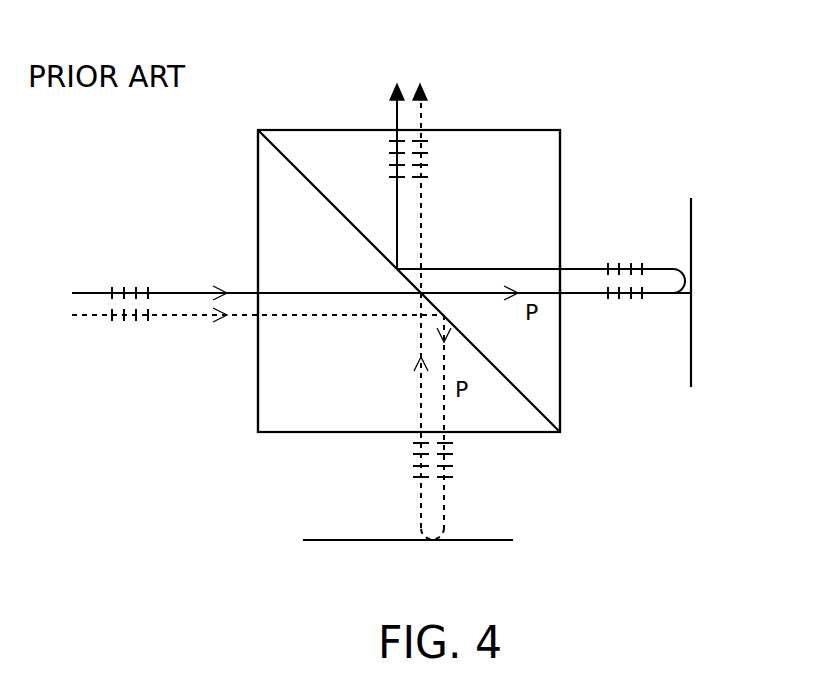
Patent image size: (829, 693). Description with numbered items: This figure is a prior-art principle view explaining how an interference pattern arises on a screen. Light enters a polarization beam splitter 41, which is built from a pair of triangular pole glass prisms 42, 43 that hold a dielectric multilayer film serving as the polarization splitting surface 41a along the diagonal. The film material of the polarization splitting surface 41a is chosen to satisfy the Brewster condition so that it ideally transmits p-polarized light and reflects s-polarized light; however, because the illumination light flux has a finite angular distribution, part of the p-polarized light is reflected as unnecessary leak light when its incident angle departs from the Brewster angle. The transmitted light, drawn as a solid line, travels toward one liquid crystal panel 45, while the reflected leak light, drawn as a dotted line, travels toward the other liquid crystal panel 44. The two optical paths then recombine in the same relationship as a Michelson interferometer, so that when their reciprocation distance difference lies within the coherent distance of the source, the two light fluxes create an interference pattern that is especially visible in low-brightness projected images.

The polarization beam splitter 41 is at (488, 85).
The dielectric multilayer film (polarization splitting surface) 41a is at (527, 397).
The triangular pole glass prism 42 is at (293, 407).
The triangular pole glass prism 43 is at (528, 152).
The liquid crystal panel 44 is at (473, 541).
The liquid crystal panel 45 is at (691, 360).